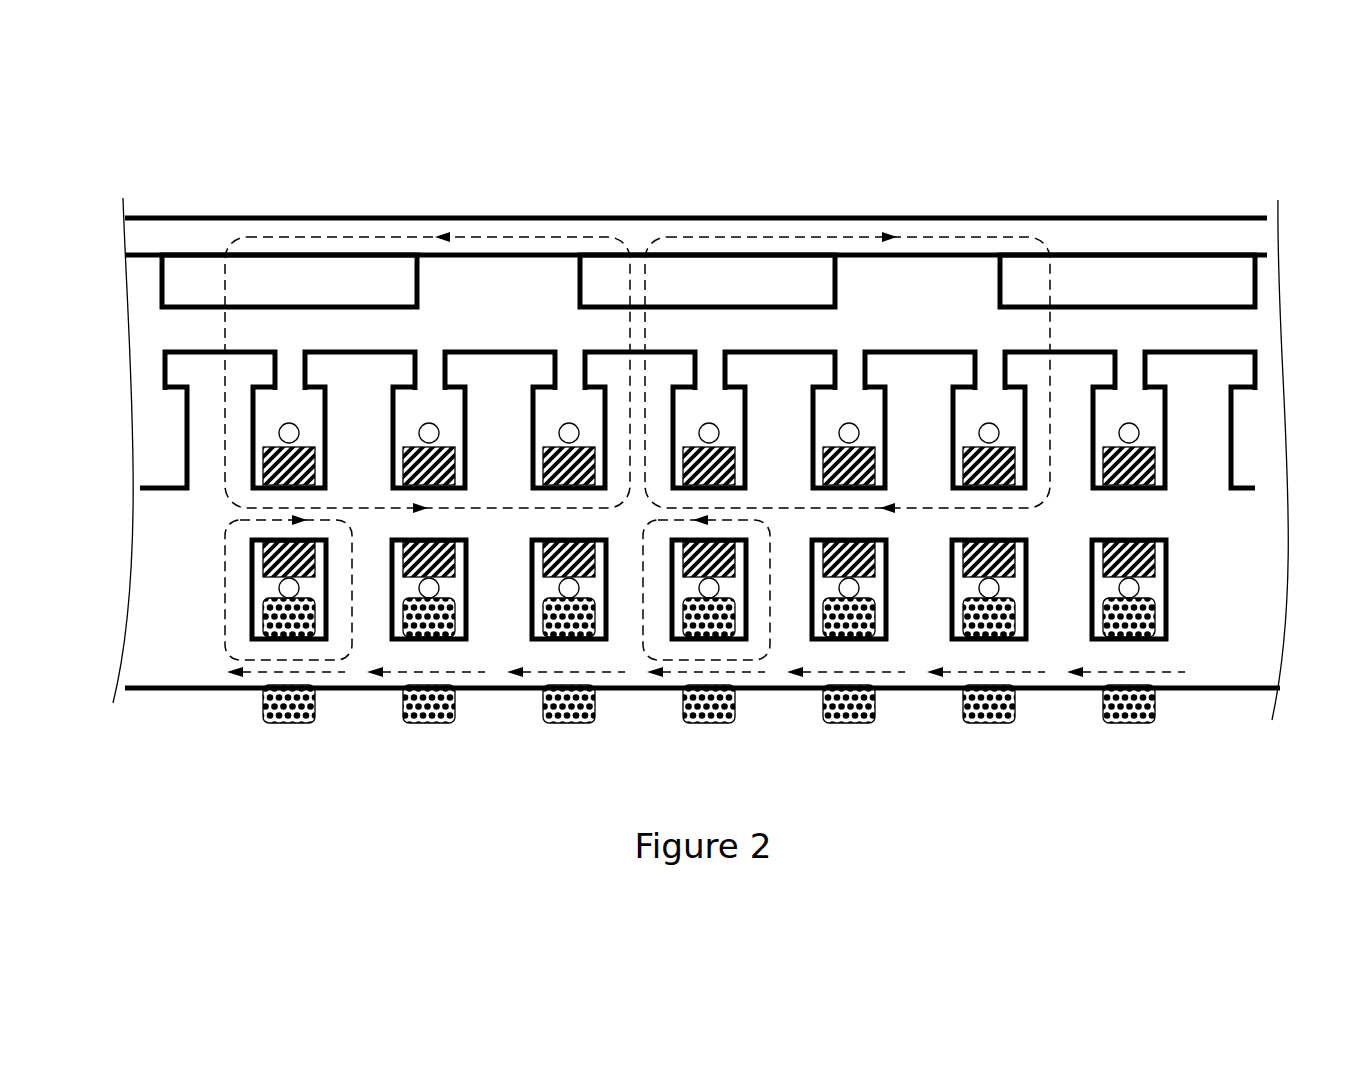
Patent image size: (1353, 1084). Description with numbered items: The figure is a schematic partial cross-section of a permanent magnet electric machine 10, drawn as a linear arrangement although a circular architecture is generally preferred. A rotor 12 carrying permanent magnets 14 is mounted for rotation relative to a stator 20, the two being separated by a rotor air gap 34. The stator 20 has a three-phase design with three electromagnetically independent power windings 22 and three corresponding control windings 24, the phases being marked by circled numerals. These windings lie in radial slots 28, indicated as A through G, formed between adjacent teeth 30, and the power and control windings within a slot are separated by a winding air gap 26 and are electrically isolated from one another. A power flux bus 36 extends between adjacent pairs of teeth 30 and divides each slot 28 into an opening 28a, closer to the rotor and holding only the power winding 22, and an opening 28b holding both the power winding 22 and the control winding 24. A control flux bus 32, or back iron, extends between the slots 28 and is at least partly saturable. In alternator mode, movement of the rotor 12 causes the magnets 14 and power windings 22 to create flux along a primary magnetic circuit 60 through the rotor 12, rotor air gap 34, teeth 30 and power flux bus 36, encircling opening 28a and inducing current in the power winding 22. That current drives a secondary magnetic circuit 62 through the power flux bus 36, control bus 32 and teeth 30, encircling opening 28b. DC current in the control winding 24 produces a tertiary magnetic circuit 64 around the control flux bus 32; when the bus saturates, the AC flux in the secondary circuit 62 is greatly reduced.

The permanent magnet electric machine 10 is at (135, 188).
The rotor 12 is at (1203, 232).
The permanent magnets 14 is at (190, 290).
The stator 20 is at (476, 334).
The power winding 22 is at (1153, 472).
The control winding 24 is at (1153, 623).
The winding air gap 26 is at (308, 588).
The radial slots 28 is at (262, 405).
The slot opening for power winding 28a is at (250, 418).
The slot opening for power and control windings 28b is at (248, 570).
The teeth 30 is at (612, 365).
The control flux bus 32 is at (263, 652).
The rotor air gap 34 is at (1203, 332).
The power flux bus 36 is at (275, 498).
The primary magnetic circuit 60 is at (225, 470).
The secondary magnetic circuit 62 is at (225, 595).
The tertiary magnetic circuit 64 is at (288, 672).